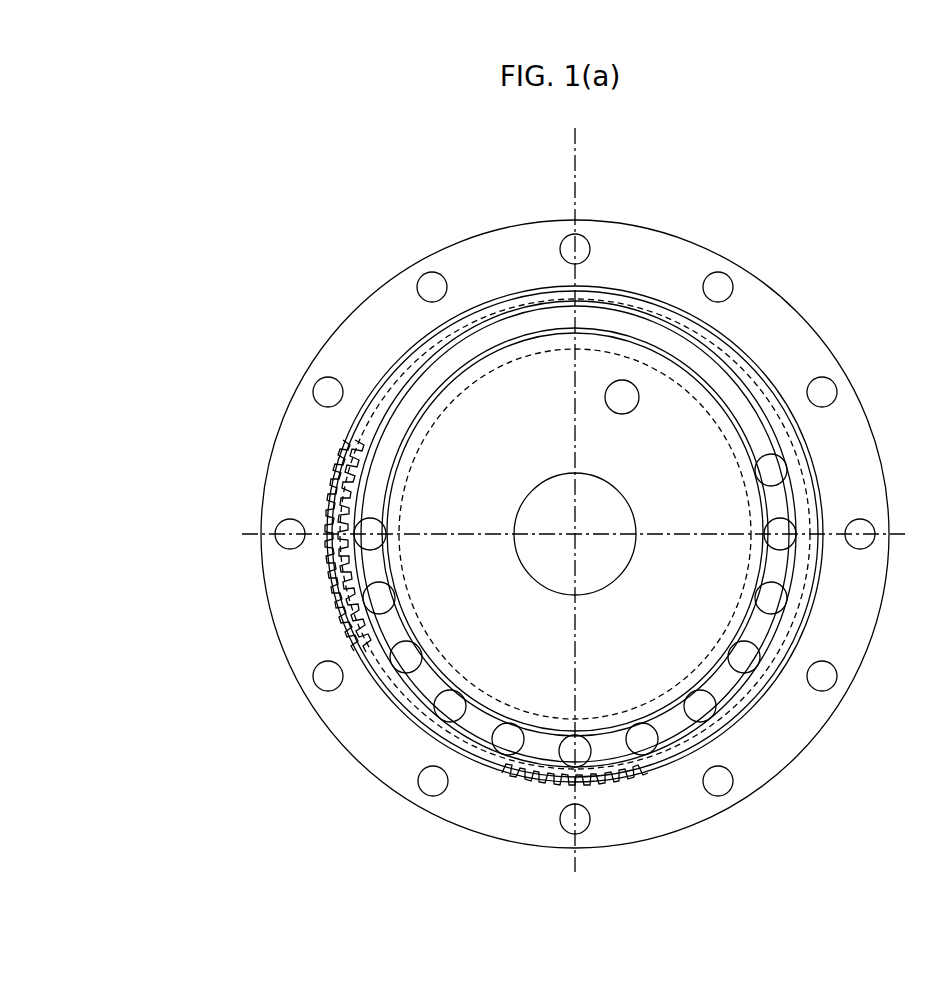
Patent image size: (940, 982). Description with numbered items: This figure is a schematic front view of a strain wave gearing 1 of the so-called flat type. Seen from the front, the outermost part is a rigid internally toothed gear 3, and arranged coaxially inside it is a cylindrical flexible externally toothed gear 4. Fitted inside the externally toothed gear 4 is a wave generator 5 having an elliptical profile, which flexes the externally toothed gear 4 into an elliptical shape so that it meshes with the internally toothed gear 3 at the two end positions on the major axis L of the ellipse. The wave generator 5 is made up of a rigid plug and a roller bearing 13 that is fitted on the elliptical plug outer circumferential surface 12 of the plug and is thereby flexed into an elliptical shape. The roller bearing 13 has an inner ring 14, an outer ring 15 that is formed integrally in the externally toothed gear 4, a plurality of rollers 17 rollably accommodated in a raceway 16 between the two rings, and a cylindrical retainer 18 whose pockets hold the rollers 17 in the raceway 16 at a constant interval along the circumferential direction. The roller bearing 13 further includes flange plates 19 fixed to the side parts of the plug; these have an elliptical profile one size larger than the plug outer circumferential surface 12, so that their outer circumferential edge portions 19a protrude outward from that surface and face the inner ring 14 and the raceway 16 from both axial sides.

The strain wave gearing 1 is at (584, 491).
The rigid internally toothed gear 3 is at (823, 460).
The cylindrical flexible externally toothed gear 4 is at (789, 406).
The wave generator 5 is at (728, 570).
The plug outer circumferential surface 12 is at (745, 463).
The roller bearing 13 is at (190, 565).
The inner ring 14 is at (393, 700).
The outer ring 15 is at (347, 648).
The raceway 16 is at (388, 632).
The rollers 17 is at (380, 600).
The cylindrical retainer 18 is at (365, 528).
The flange plates 19 is at (698, 623).
The outer circumferential edge portions 19a is at (713, 673).
The major axis L is at (578, 188).